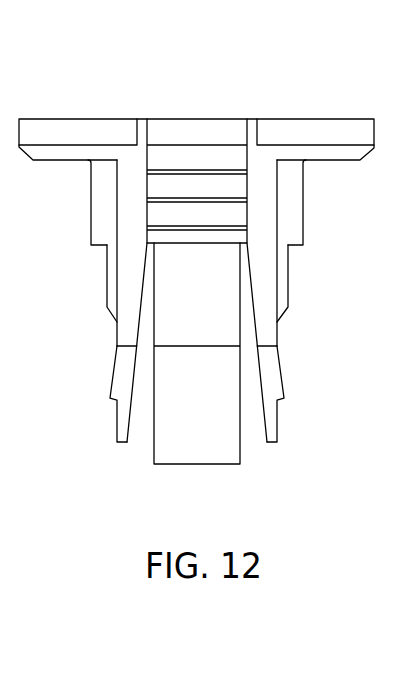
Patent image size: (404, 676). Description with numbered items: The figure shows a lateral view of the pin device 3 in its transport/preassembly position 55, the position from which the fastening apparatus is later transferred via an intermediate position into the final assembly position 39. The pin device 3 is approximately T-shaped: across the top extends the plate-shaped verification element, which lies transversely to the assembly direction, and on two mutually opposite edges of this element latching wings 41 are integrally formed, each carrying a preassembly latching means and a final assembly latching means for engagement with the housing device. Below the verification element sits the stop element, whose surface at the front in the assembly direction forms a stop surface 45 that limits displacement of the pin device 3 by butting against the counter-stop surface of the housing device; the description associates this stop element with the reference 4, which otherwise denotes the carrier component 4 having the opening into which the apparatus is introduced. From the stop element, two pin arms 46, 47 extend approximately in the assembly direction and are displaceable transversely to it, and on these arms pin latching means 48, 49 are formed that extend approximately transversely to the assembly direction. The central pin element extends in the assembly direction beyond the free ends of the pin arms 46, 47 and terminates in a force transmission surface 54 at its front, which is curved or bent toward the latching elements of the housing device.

The pin device 3 is at (208, 268).
The carrier component 4 is at (101, 113).
The final assembly position 39 is at (350, 132).
The latching wings 41 is at (195, 157).
The stop surface 45 is at (93, 252).
The pin arm 46 is at (265, 273).
The pin arm 47 is at (131, 292).
The pin latching means 48 is at (280, 404).
The pin latching means 49 is at (111, 402).
The force transmission surface 54 is at (185, 469).
The transport/preassembly position 55 is at (346, 260).